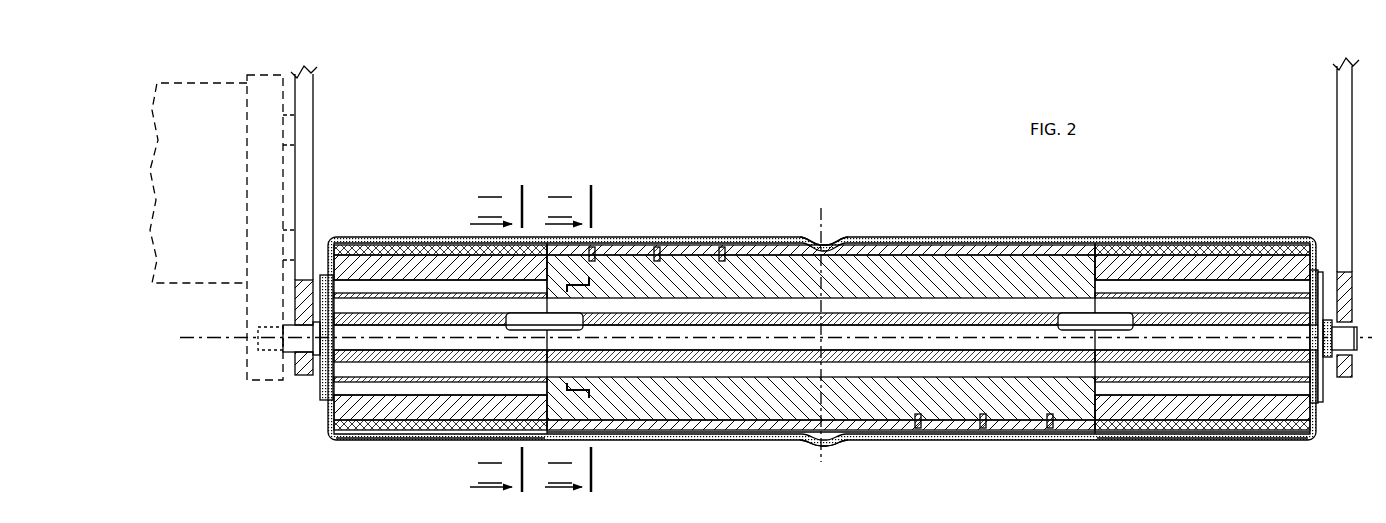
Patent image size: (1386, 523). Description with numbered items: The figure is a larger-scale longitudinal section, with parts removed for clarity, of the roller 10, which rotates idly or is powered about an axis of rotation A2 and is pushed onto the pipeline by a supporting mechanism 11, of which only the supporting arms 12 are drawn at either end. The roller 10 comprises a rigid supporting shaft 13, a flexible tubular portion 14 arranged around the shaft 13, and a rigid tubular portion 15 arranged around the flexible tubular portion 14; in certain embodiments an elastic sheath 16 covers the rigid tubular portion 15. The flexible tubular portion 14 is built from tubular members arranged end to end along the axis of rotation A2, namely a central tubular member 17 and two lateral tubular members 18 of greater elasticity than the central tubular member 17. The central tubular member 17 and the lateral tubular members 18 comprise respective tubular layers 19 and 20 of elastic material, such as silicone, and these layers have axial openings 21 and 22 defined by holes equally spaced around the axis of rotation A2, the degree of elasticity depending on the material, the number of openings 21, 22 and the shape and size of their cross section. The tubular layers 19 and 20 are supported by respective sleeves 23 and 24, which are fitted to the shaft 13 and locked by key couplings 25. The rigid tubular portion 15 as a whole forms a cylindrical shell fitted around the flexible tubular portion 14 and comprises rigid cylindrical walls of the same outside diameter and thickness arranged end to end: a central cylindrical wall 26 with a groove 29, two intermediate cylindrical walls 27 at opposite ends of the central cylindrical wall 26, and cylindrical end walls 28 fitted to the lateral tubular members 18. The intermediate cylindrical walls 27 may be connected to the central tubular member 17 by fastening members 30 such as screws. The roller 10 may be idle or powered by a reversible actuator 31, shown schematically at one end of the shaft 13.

The roller 10 is at (776, 332).
The supporting mechanism 11 is at (754, 234).
The supporting arms 12 is at (303, 182).
The rigid supporting shaft 13 is at (360, 340).
The flexible tubular portion 14 is at (1321, 398).
The rigid tubular portion 15 is at (1319, 434).
The elastic sheath 16 is at (1158, 438).
The central tubular member 17 is at (821, 302).
The lateral tubular members 18 is at (822, 294).
The tubular layer 19 is at (757, 278).
The tubular layer 20 is at (457, 267).
The axial openings 21 is at (376, 370).
The axial openings 22 is at (386, 388).
The sleeve 23 is at (673, 322).
The sleeve 24 is at (365, 318).
The key couplings 25 is at (531, 320).
The central cylindrical wall 26 is at (790, 436).
The intermediate cylindrical walls 27 is at (655, 434).
The cylindrical end walls 28 is at (365, 440).
The groove 29 is at (826, 442).
The fastening members 30 is at (593, 247).
The reversible actuator 31 is at (194, 300).
The axis of rotation A2 is at (1030, 335).